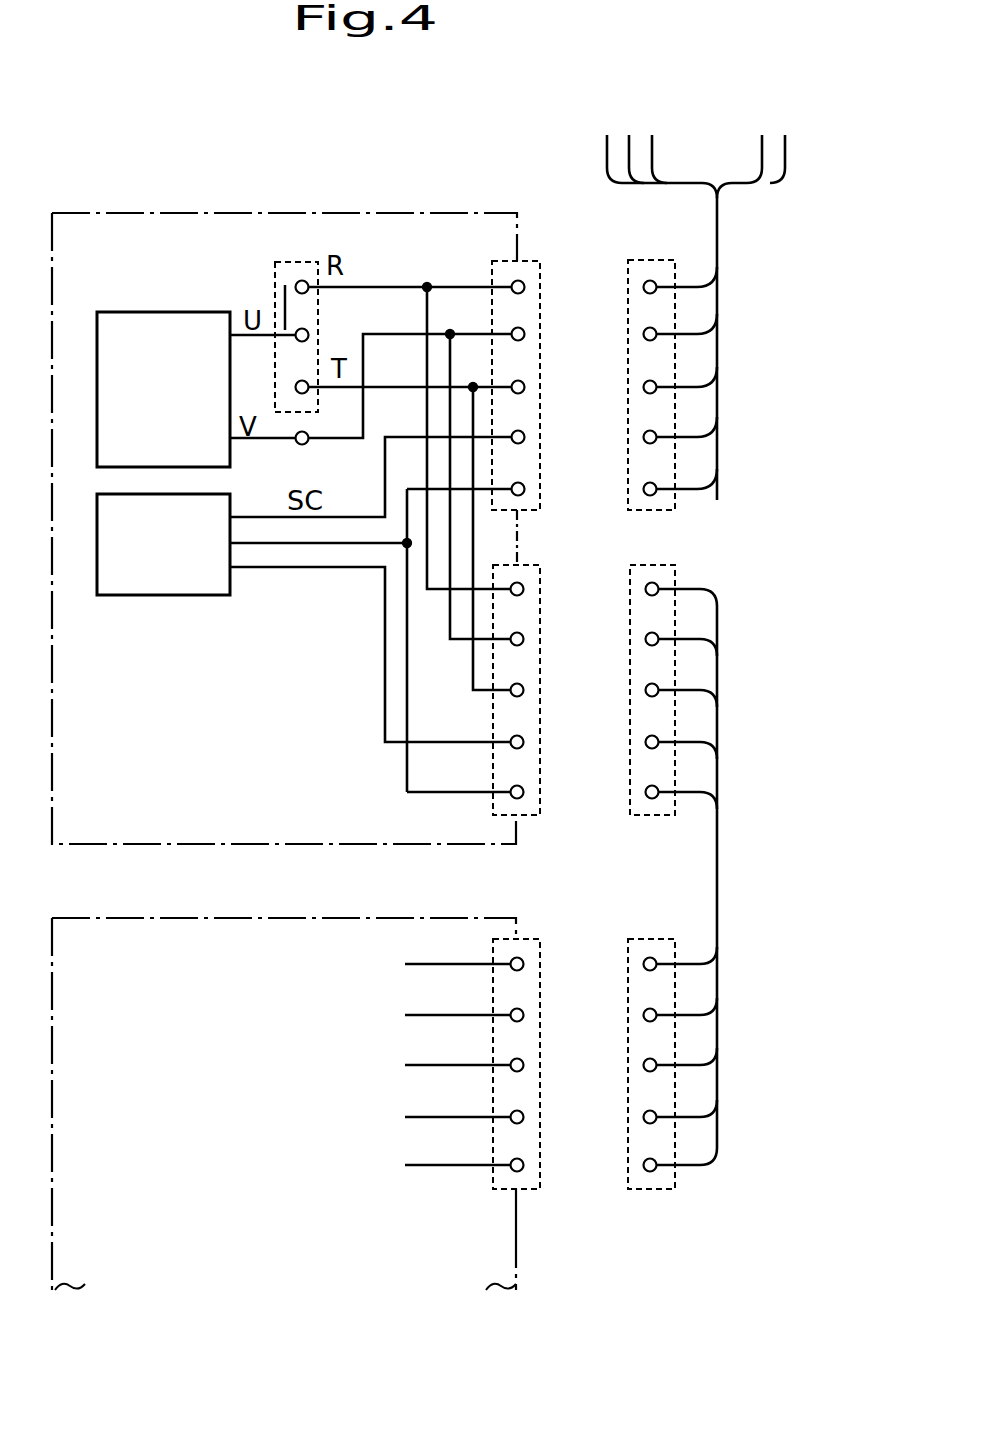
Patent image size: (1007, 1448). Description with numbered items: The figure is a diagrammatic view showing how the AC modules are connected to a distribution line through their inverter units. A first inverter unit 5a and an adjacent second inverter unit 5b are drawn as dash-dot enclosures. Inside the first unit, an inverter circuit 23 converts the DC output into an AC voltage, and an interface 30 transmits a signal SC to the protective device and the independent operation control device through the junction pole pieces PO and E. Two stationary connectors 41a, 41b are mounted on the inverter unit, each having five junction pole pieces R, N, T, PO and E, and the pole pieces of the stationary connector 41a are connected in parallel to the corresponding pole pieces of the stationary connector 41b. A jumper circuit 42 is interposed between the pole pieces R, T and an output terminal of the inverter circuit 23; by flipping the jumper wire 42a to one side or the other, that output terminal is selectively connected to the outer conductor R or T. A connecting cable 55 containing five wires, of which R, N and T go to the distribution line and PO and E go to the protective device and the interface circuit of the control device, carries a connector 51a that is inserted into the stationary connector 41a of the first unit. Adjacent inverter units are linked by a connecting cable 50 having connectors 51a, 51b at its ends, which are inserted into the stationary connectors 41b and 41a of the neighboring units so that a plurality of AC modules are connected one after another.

The inverter unit VTU1 5a is at (290, 213).
The inverter unit VTU2 5b is at (264, 916).
The inverter circuit 23 is at (146, 312).
The interface 30 is at (155, 595).
The jumper circuit 42 is at (289, 262).
The jumper wire 42a is at (282, 297).
The stationary connector 41a is at (528, 260).
The stationary connector 41b is at (528, 565).
The connector 51a is at (643, 258).
The connector 51b is at (645, 939).
The connecting cable 55 is at (720, 258).
The connecting cable 50 is at (720, 888).